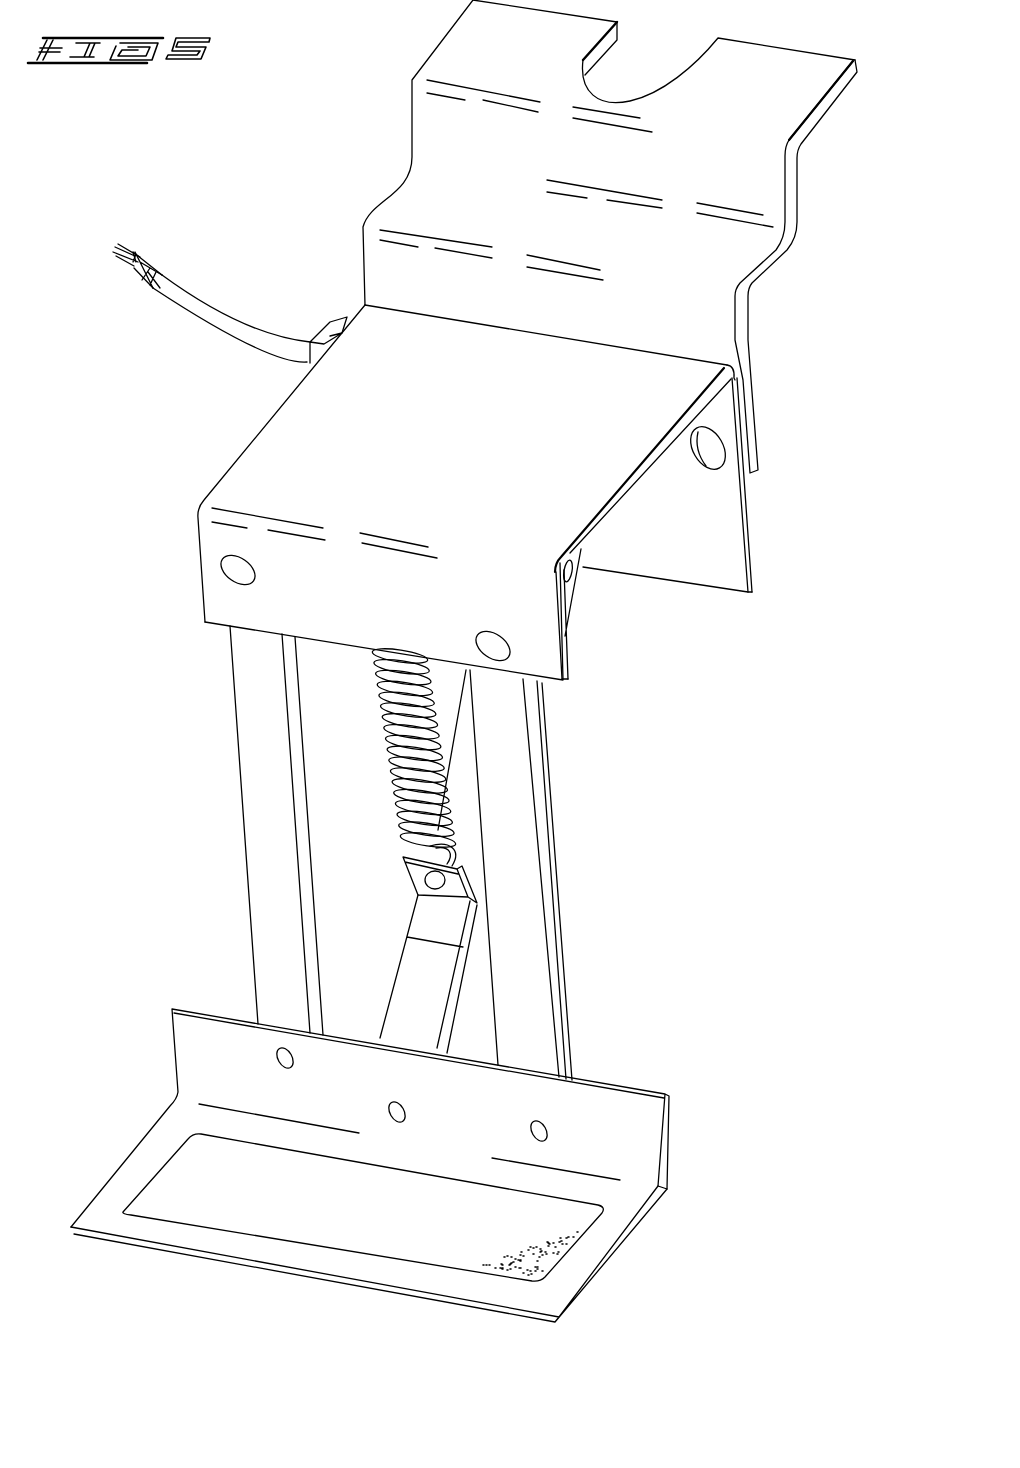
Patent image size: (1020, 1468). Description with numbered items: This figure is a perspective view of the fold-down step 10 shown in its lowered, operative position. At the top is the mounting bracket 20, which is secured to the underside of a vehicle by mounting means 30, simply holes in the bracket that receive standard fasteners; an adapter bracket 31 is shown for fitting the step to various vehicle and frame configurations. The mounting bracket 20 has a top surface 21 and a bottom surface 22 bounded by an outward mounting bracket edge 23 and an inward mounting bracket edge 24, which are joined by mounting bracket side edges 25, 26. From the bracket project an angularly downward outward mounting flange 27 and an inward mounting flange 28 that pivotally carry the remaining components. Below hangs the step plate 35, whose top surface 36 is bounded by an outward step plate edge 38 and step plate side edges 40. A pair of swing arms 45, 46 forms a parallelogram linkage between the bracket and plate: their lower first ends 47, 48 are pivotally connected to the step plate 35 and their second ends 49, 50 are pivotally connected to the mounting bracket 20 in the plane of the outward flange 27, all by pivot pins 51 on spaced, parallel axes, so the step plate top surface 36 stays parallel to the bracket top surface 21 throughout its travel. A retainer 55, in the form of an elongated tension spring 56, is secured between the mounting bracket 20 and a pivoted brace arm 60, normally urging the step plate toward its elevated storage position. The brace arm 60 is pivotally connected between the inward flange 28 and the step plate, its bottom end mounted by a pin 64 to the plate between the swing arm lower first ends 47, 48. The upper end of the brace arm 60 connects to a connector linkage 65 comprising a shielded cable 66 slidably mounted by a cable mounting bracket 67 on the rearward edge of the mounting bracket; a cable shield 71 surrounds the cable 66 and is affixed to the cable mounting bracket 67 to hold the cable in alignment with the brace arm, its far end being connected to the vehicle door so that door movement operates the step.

The fold-down step 10 is at (223, 805).
The mounting bracket 20 is at (627, 340).
The top surface 21 is at (483, 426).
The bottom surface 22 is at (613, 515).
The outward mounting bracket edge 23 is at (551, 571).
The inward mounting bracket edge 24 is at (707, 365).
The mounting bracket side edge 25 is at (247, 453).
The mounting bracket side edge 26 is at (640, 478).
The outward mounting flange 27 is at (553, 662).
The inward mounting flange 28 is at (728, 550).
The mounting means 30 is at (713, 458).
The adapter bracket 31 is at (770, 190).
The step plate 35 is at (616, 1254).
The step plate top surface 36 is at (557, 1281).
The outward step plate edge 38 is at (206, 1265).
The step plate side edges 40 is at (116, 1155).
The swing arm 45 is at (520, 782).
The swing arm 46 is at (265, 905).
The lower first end 47 is at (566, 1070).
The lower first end 48 is at (327, 1013).
The second end 49 is at (536, 705).
The second end 50 is at (242, 647).
The pivot pins 51 is at (248, 568).
The retainer 55 is at (383, 792).
The tension spring 56 is at (382, 753).
The brace arm 60 is at (393, 953).
The pin 64 is at (404, 1115).
The connector linkage 65 is at (233, 343).
The shielded cable 66 is at (147, 263).
The cable mounting bracket 67 is at (333, 323).
The cable shield 71 is at (210, 315).